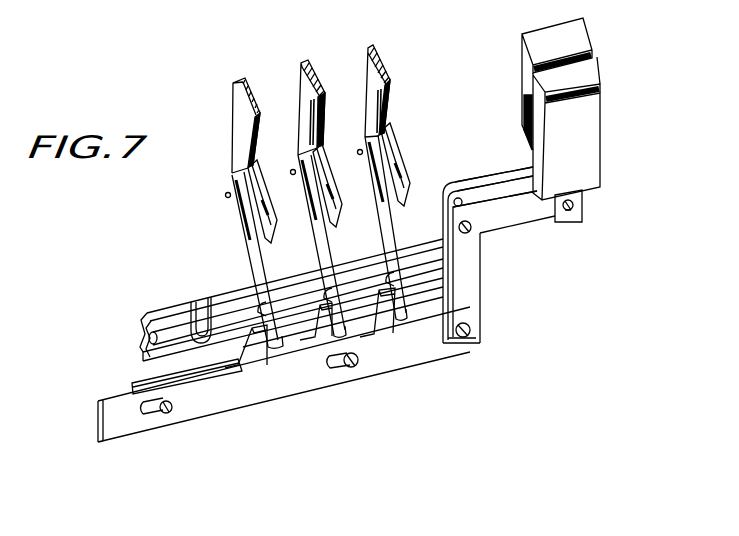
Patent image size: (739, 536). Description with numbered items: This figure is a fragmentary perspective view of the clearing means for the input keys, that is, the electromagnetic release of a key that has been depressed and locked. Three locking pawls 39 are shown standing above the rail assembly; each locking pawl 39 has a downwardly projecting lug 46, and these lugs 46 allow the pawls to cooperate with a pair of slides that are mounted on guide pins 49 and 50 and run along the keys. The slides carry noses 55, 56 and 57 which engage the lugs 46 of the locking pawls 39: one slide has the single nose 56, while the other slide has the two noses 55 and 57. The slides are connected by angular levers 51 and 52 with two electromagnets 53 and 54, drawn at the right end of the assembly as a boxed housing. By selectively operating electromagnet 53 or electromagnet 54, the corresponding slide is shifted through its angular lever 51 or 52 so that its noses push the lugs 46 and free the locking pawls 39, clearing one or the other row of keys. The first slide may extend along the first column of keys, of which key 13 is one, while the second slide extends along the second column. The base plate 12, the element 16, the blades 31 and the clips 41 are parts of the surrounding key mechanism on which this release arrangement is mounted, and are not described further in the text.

The base plate 12 is at (125, 430).
The key 13 is at (138, 380).
The lower rail 16 is at (260, 352).
The blade 31 is at (240, 117).
The locking pawl 39 is at (243, 261).
The clip 41 is at (226, 192).
The lug 46 is at (412, 268).
The guide pin 49 is at (357, 368).
The guide pin 50 is at (168, 414).
The angular lever 51 is at (470, 272).
The angular lever 52 is at (483, 187).
The electromagnet 53 is at (592, 122).
The electromagnet 54 is at (580, 37).
The nose 55 is at (253, 357).
The nose 56 is at (323, 327).
The nose 57 is at (383, 317).